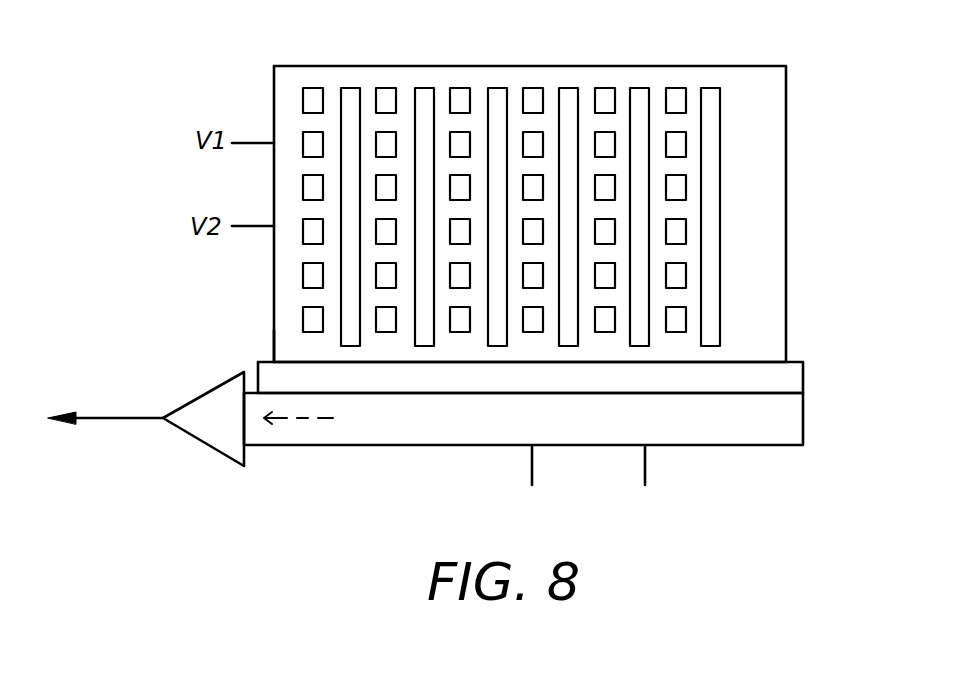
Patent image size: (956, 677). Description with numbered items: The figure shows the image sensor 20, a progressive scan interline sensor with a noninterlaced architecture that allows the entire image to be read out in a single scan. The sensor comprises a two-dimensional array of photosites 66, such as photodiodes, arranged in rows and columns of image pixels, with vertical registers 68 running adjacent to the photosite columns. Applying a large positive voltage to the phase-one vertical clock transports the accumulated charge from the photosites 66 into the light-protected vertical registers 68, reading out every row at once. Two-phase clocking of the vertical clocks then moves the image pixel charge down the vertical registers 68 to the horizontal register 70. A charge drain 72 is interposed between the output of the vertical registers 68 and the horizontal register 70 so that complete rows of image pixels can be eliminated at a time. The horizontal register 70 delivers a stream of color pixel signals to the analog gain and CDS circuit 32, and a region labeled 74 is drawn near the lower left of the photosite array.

The image sensor 20 is at (775, 122).
The photosites 66 is at (313, 88).
The vertical registers 68 is at (351, 88).
The transfer region 74 is at (297, 340).
The charge drain 72 is at (270, 374).
The horizontal register 70 is at (740, 448).
The analog gain and CDS circuit 32 is at (112, 415).